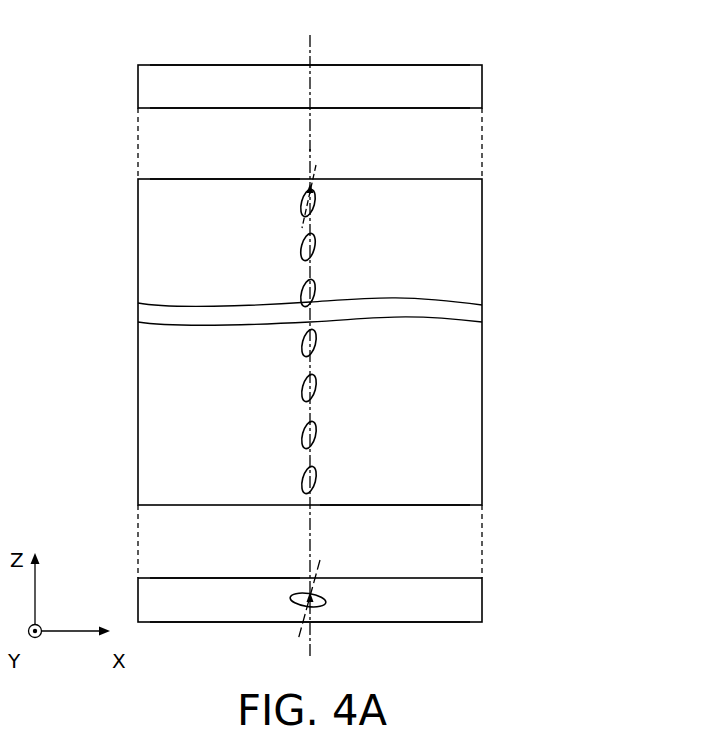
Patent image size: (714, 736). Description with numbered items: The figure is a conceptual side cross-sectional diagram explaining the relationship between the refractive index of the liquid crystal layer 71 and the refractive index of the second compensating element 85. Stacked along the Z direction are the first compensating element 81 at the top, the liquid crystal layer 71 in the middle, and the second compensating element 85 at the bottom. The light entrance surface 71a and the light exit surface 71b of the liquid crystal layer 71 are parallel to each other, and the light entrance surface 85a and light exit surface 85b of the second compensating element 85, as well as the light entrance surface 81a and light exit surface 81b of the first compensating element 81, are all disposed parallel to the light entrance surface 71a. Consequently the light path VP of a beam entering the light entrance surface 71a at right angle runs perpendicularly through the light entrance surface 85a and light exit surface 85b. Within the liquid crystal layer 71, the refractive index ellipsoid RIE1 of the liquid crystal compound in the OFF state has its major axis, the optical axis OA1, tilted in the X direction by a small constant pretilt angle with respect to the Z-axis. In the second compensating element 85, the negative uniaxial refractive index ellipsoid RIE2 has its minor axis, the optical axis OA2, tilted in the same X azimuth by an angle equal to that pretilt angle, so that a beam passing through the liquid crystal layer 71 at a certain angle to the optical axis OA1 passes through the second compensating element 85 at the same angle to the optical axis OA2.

The first compensating element 81 is at (483, 88).
The light entrance surface 81a is at (180, 64).
The light exit surface 81b is at (466, 108).
The liquid crystal layer 71 is at (508, 187).
The light entrance surface 71a is at (152, 178).
The light exit surface 71b is at (442, 505).
The second compensating element 85 is at (483, 600).
The light entrance surface 85a is at (180, 578).
The light exit surface 85b is at (235, 622).
The refractive index ellipsoid RIE1 is at (314, 203).
The refractive index ellipsoid RIE2 is at (328, 606).
The optical axis OA1 is at (317, 176).
The optical axis OA2 is at (320, 586).
The light path VP is at (310, 150).